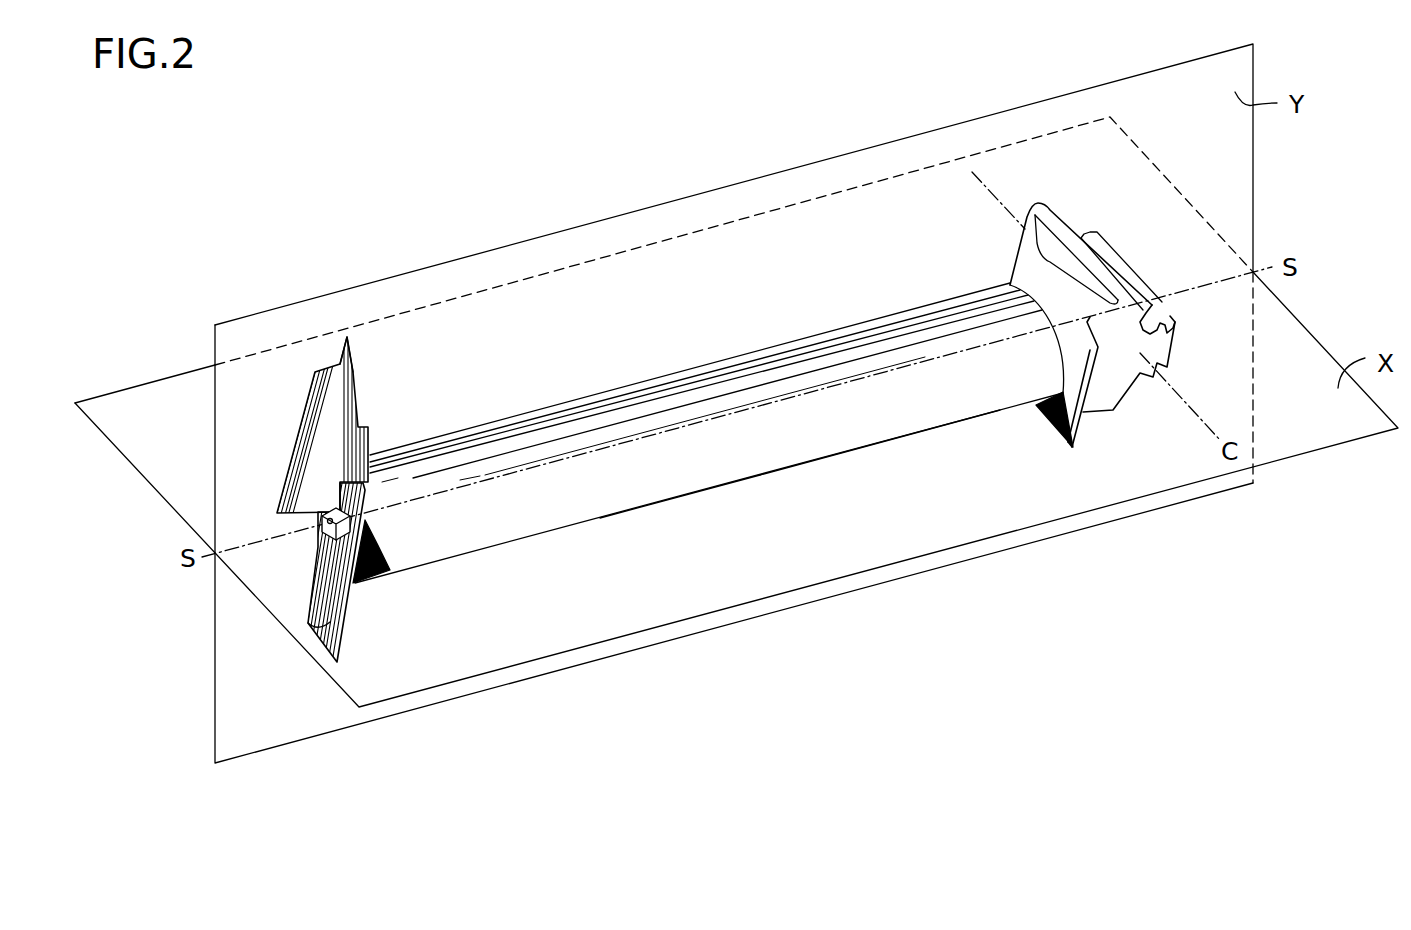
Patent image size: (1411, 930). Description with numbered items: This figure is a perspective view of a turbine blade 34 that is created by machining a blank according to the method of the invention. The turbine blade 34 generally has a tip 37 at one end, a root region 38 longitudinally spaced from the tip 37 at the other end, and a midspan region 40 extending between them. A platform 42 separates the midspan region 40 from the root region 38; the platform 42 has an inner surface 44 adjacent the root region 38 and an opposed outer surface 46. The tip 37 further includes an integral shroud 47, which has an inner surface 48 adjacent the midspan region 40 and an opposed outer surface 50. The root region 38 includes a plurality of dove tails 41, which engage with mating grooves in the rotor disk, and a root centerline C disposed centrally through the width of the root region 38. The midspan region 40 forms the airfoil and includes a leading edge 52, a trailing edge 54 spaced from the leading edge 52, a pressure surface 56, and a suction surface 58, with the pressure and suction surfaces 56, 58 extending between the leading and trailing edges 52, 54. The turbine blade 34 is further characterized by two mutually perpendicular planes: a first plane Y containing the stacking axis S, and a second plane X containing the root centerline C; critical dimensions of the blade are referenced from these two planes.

The turbine blade 34 is at (577, 370).
The tip 37 is at (370, 583).
The root region 38 is at (1110, 368).
The midspan region 40 is at (733, 462).
The dove tails 41 is at (1153, 307).
The platform 42 is at (1079, 449).
The inner surface of platform 44 is at (1080, 430).
The outer surface of platform 46 is at (1062, 418).
The integral shroud 47 is at (328, 634).
The inner surface of shroud 48 is at (357, 384).
The outer surface of shroud 50 is at (337, 438).
The leading edge 52 is at (642, 380).
The trailing edge 54 is at (737, 483).
The pressure surface 56 is at (1020, 307).
The suction surface 58 is at (872, 415).